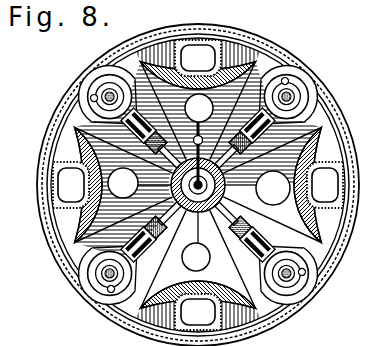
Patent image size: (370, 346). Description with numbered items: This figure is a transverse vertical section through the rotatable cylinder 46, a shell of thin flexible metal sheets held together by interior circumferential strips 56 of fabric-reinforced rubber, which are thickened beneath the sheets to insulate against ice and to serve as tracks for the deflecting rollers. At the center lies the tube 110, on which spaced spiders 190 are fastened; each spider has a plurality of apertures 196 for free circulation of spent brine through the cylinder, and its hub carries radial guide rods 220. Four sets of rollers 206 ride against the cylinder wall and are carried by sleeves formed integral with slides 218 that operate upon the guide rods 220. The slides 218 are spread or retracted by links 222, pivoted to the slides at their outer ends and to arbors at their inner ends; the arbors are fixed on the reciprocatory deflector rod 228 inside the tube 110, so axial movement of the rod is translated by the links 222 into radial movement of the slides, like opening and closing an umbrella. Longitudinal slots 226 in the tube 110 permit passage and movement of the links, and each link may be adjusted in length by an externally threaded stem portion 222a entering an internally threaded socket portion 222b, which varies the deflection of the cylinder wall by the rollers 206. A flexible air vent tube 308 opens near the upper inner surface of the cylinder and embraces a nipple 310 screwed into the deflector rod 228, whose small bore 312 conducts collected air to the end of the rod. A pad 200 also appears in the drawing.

The cylinder 46 is at (191, 22).
The interior circumferential strips 56 is at (70, 110).
The tube 110 is at (162, 191).
The spiders 190 is at (283, 312).
The apertures 196 is at (115, 306).
The pad 200 is at (200, 320).
The rollers 206 is at (101, 93).
The slides 218 is at (150, 74).
The radial guide rods 220 is at (86, 270).
The links 222 is at (159, 219).
The externally threaded stem portion 222a is at (226, 203).
The internally threaded socket portion 222b is at (246, 226).
The longitudinal slots 226 is at (198, 199).
The deflector rod 228 is at (257, 188).
The flexible air vent tube 308 is at (198, 58).
The nipple 310 is at (199, 139).
The small bore 312 is at (273, 193).